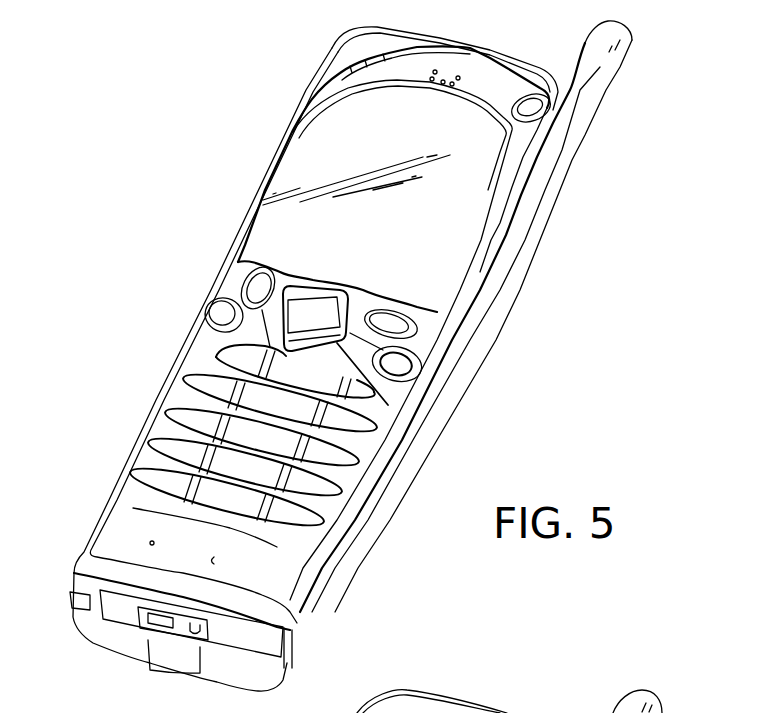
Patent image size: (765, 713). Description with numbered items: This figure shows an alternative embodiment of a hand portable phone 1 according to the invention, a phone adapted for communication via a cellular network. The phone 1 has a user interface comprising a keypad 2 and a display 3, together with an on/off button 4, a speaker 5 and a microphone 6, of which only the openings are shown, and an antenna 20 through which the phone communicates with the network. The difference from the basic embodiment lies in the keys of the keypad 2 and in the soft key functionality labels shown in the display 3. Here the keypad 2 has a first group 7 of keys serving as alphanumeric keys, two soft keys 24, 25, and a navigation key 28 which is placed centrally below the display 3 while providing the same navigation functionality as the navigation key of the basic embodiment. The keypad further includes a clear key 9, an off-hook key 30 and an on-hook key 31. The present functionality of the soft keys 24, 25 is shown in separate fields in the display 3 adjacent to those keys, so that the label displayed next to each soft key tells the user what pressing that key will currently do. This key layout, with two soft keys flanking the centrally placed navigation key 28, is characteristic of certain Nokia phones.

The phone 1 is at (185, 186).
The keypad 2 is at (133, 388).
The display 3 is at (303, 140).
The on/off button 4 is at (540, 109).
The speaker 5 is at (455, 74).
The microphone 6 is at (135, 545).
The first group of keys 7 is at (388, 405).
The clear key 9 is at (215, 317).
The antenna 20 is at (608, 72).
The soft key 24 is at (418, 318).
The soft key 25 is at (250, 277).
The navigation key 28 is at (333, 356).
The off-hook key 30 is at (215, 352).
The on-hook key 31 is at (340, 380).